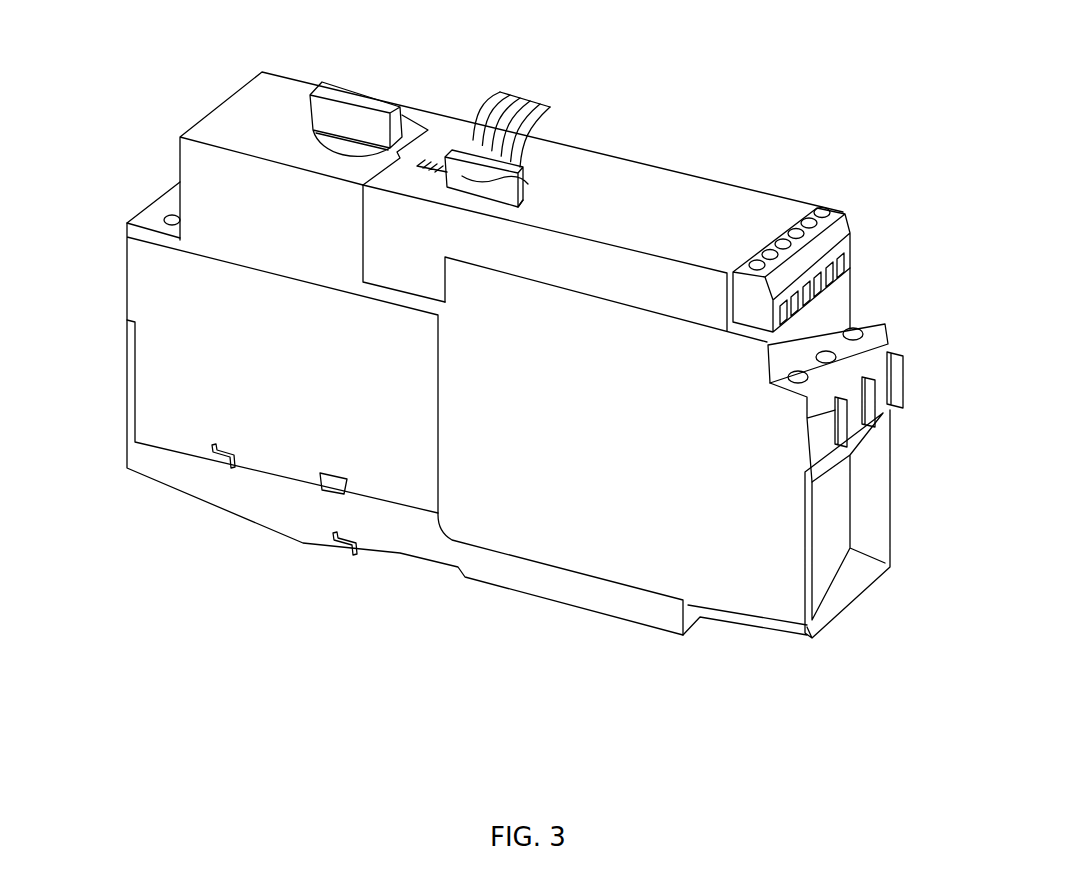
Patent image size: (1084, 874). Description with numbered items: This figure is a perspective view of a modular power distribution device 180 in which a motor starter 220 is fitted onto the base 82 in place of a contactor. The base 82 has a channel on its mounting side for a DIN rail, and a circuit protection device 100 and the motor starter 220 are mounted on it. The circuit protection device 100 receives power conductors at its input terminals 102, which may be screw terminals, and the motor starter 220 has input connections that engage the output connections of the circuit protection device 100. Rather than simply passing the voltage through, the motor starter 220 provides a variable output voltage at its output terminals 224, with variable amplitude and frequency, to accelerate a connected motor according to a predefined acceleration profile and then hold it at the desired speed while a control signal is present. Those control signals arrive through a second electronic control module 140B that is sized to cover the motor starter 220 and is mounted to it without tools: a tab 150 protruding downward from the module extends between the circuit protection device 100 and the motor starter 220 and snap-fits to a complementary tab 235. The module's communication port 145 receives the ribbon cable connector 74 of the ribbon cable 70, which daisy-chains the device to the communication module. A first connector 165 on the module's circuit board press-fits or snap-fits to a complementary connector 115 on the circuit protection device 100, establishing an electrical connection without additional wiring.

The modular power distribution device 180 is at (708, 78).
The circuit protection device 100 is at (135, 388).
The input terminals 102 is at (153, 210).
The complementary connector 115 is at (412, 103).
The first connector 165 is at (436, 103).
The ribbon cable 70 is at (545, 132).
The ribbon cable connector 74 is at (527, 185).
The communication port 145 is at (533, 212).
The second electronic control module 140B is at (718, 220).
The tab 150 is at (428, 263).
The complementary tab 235 is at (449, 292).
The base 82 is at (203, 482).
The motor starter 220 is at (605, 560).
The output terminals 224 is at (858, 328).